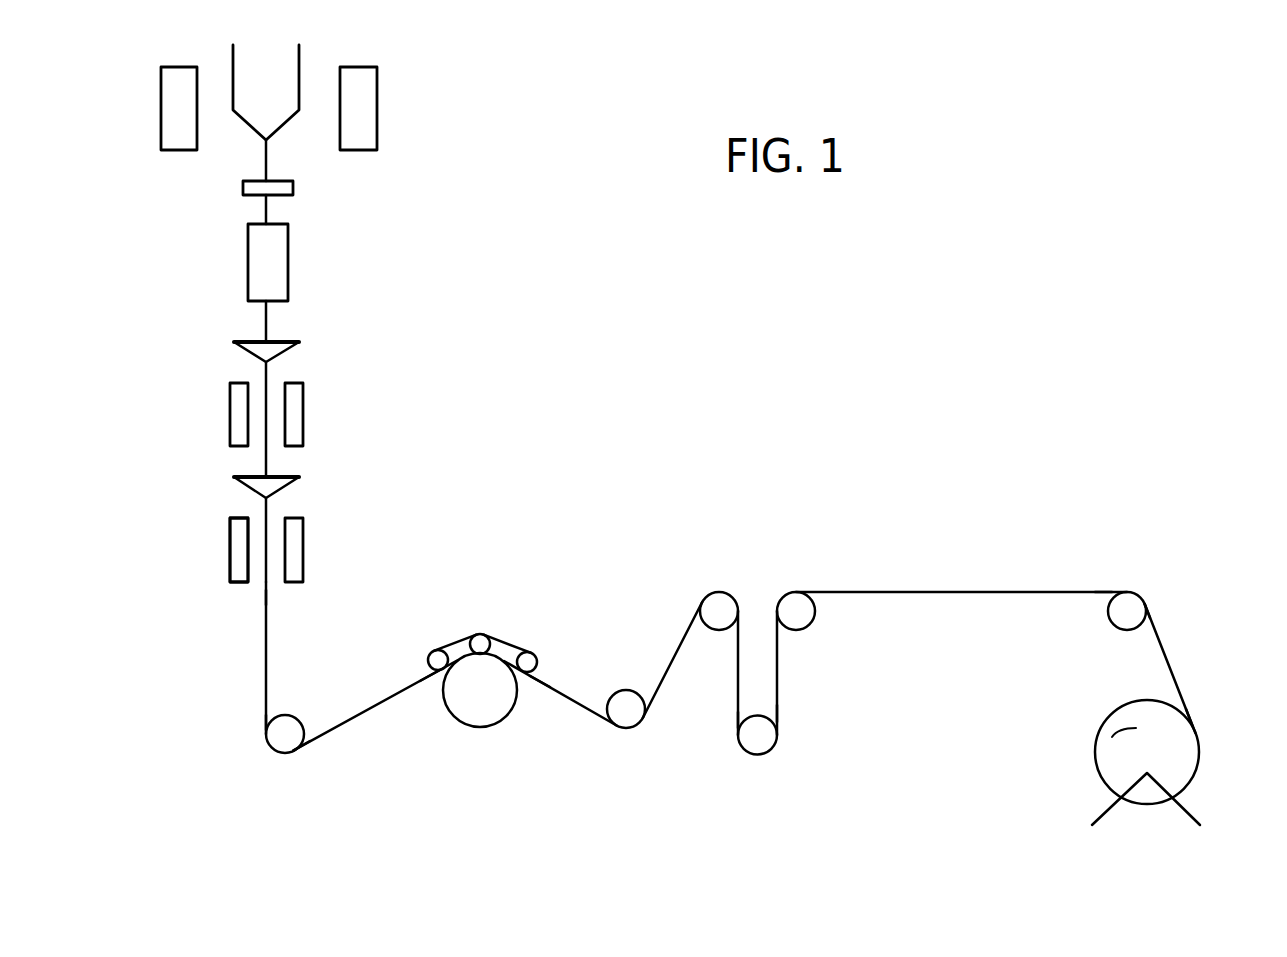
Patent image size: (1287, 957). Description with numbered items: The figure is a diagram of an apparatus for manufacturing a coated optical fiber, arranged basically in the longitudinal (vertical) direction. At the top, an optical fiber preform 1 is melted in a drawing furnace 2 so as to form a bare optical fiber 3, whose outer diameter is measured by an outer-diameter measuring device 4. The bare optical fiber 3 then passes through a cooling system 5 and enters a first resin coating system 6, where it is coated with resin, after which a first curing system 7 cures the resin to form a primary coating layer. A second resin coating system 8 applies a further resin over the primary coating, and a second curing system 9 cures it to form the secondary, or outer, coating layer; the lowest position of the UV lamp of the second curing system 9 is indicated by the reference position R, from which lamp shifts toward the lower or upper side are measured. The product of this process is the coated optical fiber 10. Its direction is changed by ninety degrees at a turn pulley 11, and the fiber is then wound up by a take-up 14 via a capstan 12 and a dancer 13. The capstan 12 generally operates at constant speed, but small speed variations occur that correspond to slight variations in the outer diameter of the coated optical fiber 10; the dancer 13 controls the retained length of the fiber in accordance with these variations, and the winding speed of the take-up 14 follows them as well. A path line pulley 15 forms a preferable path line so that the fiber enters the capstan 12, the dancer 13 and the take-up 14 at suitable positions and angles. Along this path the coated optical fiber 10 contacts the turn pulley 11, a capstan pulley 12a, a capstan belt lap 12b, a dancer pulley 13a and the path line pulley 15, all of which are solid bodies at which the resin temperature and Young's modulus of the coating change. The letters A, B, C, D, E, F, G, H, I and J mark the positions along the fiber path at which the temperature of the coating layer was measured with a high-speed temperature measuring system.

The optical fiber preform 1 is at (300, 68).
The drawing furnace 2 is at (377, 108).
The bare optical fiber 3 is at (267, 158).
The outer-diameter measuring device 4 is at (293, 186).
The cooling system 5 is at (288, 262).
The first resin coating system 6 is at (299, 343).
The first curing system 7 is at (303, 410).
The second resin coating system 8 is at (293, 481).
The second curing system 9 is at (303, 548).
The reference position of the UV lamp R is at (222, 584).
The coated optical fiber 10 is at (267, 668).
The turn pulley 11 is at (296, 754).
The capstan 12 is at (501, 691).
The capstan pulley 12a is at (505, 722).
The capstan belt lap 12b is at (471, 633).
The dancer 13 is at (757, 674).
The dancer pulley 13a is at (757, 755).
The take-up 14 is at (1137, 805).
The path line pulley 15 is at (1131, 605).
The measured position A is at (260, 605).
The measured position B is at (255, 721).
The measured position C is at (310, 754).
The measured position D is at (421, 664).
The measured position E is at (548, 660).
The measured position F is at (727, 720).
The measured position G is at (790, 712).
The measured position H is at (1093, 603).
The measured position I is at (1162, 616).
The measured position J is at (1198, 710).